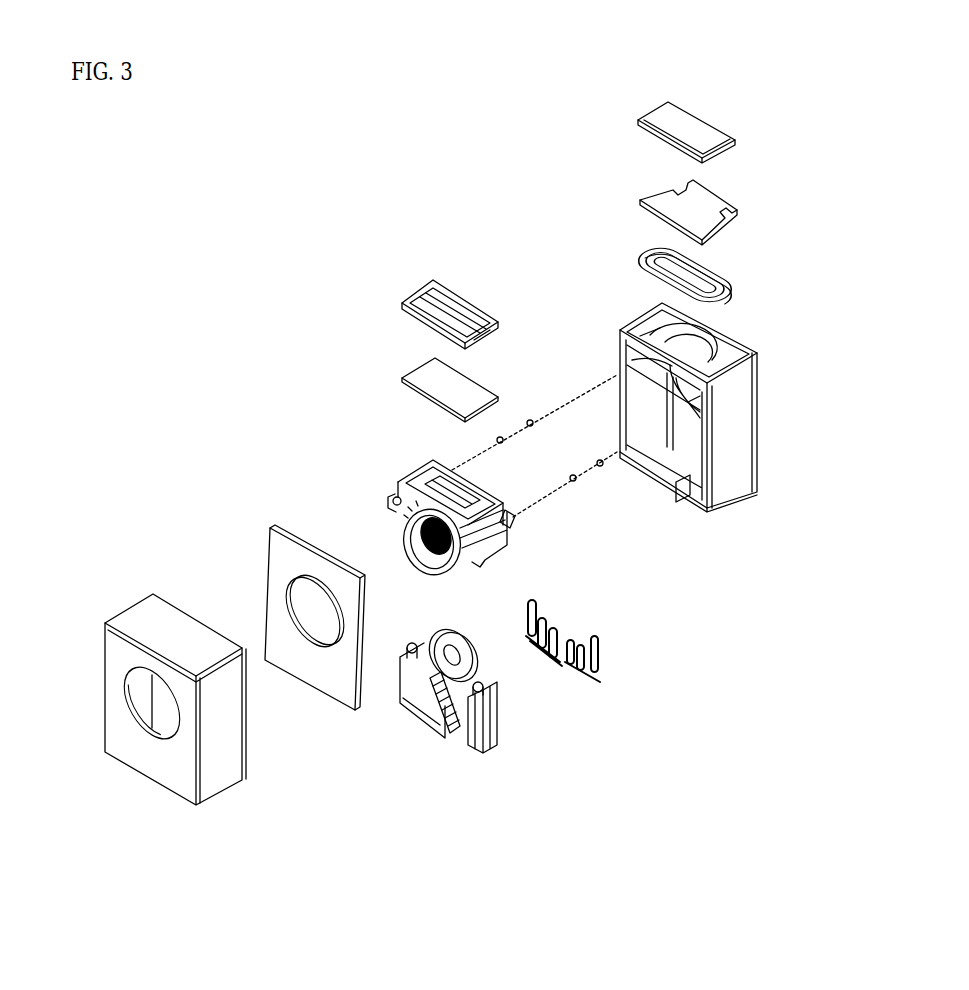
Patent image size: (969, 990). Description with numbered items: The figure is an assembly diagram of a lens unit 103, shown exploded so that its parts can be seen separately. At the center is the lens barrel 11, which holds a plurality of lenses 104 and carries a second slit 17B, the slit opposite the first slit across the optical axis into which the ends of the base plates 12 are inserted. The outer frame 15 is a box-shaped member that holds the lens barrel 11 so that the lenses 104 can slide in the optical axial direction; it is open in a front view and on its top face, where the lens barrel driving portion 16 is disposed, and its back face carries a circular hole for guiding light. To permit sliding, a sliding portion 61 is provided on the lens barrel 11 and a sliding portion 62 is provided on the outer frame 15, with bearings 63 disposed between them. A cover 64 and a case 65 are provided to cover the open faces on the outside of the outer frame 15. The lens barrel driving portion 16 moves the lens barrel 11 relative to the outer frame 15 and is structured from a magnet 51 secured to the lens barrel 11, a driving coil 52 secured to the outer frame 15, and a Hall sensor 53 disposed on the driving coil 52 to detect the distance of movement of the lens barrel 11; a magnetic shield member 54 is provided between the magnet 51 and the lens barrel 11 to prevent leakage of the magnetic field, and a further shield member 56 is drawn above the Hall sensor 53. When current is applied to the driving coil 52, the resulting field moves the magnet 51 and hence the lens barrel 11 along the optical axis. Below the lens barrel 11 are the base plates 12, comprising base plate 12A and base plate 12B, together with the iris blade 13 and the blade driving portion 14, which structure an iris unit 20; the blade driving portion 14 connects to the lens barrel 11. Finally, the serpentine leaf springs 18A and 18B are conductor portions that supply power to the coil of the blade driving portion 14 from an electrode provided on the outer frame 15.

The lens unit 103 is at (252, 240).
The cushion sheet 56 is at (638, 120).
The lens barrel driving portion 16 is at (460, 215).
The Hall sensor 53 is at (640, 200).
The driving coil 52 is at (642, 262).
The magnet 51 is at (458, 292).
The magnetic shield member 54 is at (400, 379).
The bearings 63 is at (530, 418).
The second slit 17B is at (406, 472).
The lenses 104 is at (426, 550).
The lens barrel 11 is at (405, 540).
The sliding portion 61 is at (512, 518).
The outer frame 15 is at (728, 403).
The sliding portion 62 is at (688, 418).
The cover 64 is at (270, 523).
The case 65 is at (128, 603).
The iris unit 20 is at (457, 833).
The base plates 12 is at (398, 786).
The base plate 12A is at (392, 690).
The base plate 12B is at (432, 652).
The iris blade 13 is at (438, 700).
The blade driving portion 14 is at (468, 718).
The leaf spring 18A is at (563, 632).
The leaf spring 18B is at (603, 640).